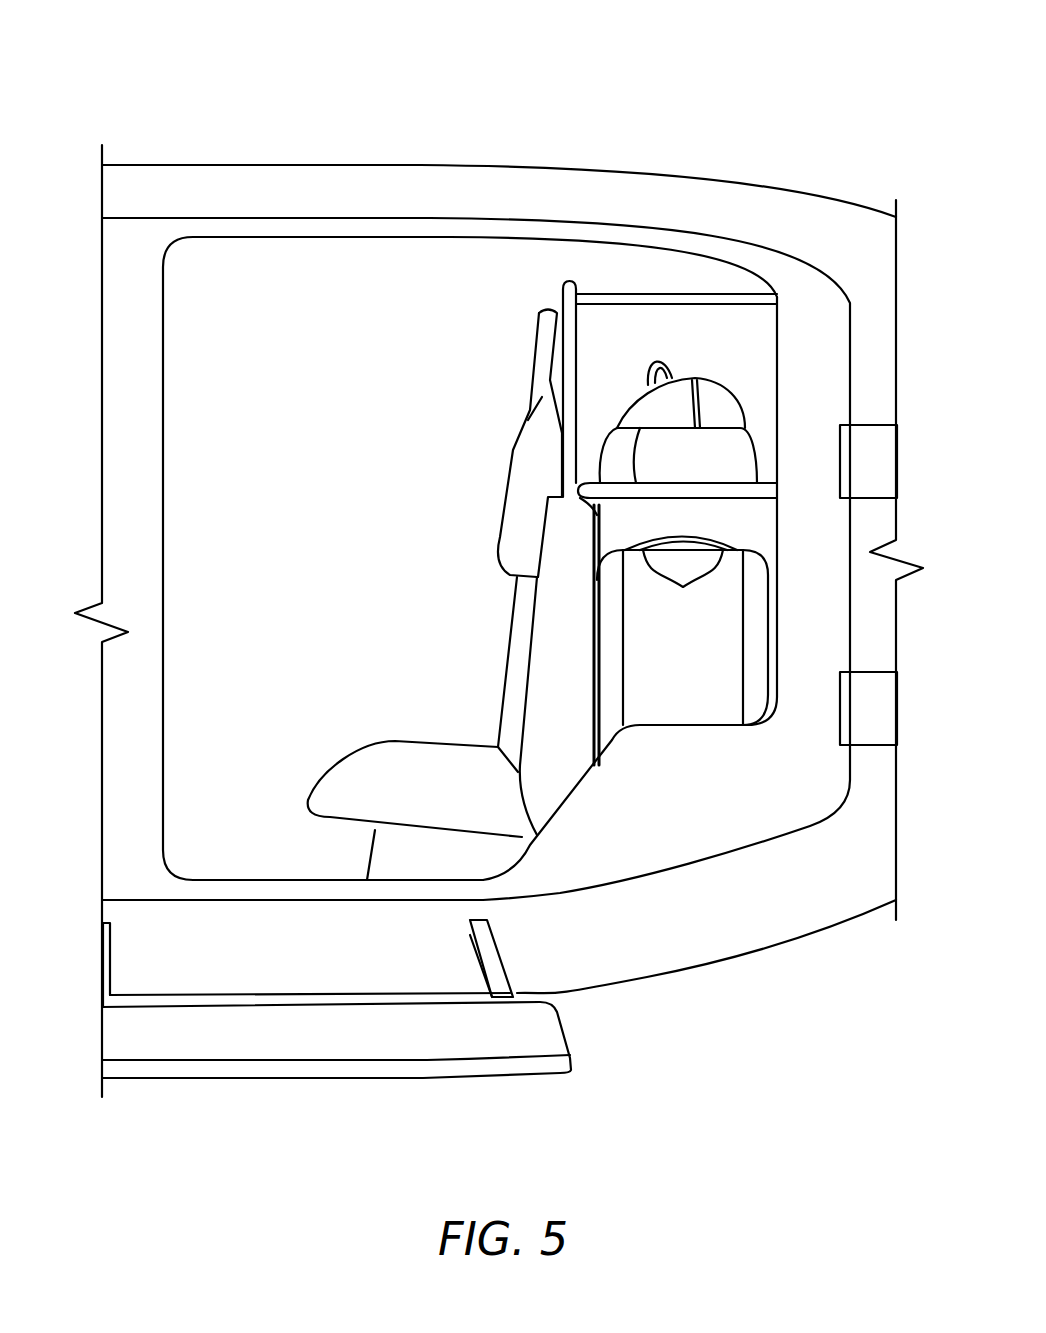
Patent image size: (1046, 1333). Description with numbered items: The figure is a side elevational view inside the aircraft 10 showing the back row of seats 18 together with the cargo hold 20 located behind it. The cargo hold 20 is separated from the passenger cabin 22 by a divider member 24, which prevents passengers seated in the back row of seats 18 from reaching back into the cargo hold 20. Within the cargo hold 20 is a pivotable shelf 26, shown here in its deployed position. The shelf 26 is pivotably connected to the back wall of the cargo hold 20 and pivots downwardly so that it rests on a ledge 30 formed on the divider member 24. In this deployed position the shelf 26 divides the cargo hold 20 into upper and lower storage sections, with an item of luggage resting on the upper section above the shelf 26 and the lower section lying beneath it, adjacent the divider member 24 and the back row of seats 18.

The aircraft 10 is at (777, 128).
The back row of seats 18 is at (437, 695).
The cargo hold 20 is at (723, 357).
The passenger cabin 22 is at (277, 482).
The divider member 24 is at (568, 287).
The pivotable shelf 26 is at (728, 492).
The ledge 30 is at (588, 503).